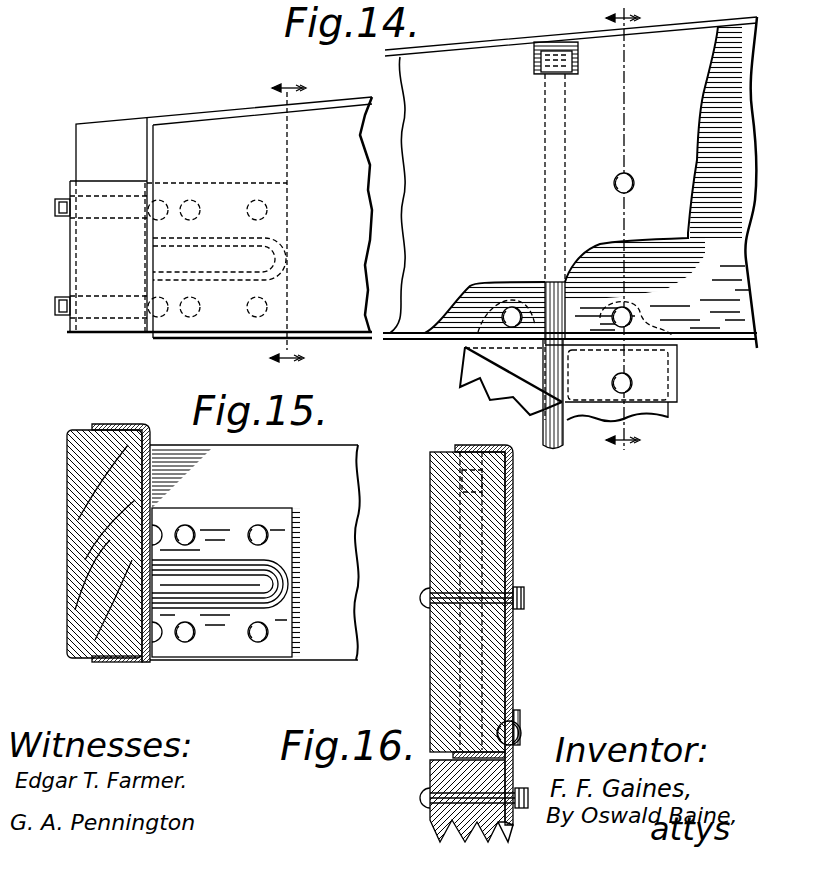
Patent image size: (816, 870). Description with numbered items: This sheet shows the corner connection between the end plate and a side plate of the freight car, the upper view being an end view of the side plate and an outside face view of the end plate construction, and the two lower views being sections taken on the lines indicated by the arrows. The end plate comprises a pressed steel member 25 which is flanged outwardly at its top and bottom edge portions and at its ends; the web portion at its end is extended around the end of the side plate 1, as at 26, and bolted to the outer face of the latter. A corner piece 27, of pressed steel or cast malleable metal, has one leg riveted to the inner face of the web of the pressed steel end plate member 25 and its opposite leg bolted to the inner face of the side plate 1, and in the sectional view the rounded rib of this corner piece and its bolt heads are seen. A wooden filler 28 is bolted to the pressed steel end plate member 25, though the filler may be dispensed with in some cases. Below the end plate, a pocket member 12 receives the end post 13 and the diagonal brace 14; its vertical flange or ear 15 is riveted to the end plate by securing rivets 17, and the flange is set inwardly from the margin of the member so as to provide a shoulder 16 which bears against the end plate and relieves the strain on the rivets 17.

In FIG. 14, the side plate 1 is at (219, 214).
In FIG. 15, the side plate 1 is at (322, 498).
In FIG. 14, the pocket member 12 is at (655, 384).
In FIG. 16, the pocket member 12 is at (432, 780).
In FIG. 14, the end post 13 is at (645, 415).
In FIG. 16, the end post 13 is at (468, 815).
In FIG. 14, the diagonal brace 14 is at (498, 382).
In FIG. 14, the flange or ear 15 is at (580, 302).
In FIG. 16, the flange or ear 15 is at (520, 718).
In FIG. 14, the shoulder 16 is at (625, 236).
In FIG. 14, the securing rivet 17 is at (512, 305).
In FIG. 16, the securing rivet 17 is at (525, 735).
In FIG. 14, the pressed steel end plate member 25 is at (150, 155).
In FIG. 15, the pressed steel end plate member 25 is at (128, 426).
In FIG. 16, the pressed steel end plate member 25 is at (513, 558).
In FIG. 14, the extended web portion 26 is at (100, 255).
In FIG. 15, the corner piece 27 is at (232, 532).
In FIG. 14, the wooden filler 28 is at (526, 179).
In FIG. 15, the wooden filler 28 is at (95, 552).
In FIG. 16, the wooden filler 28 is at (450, 668).